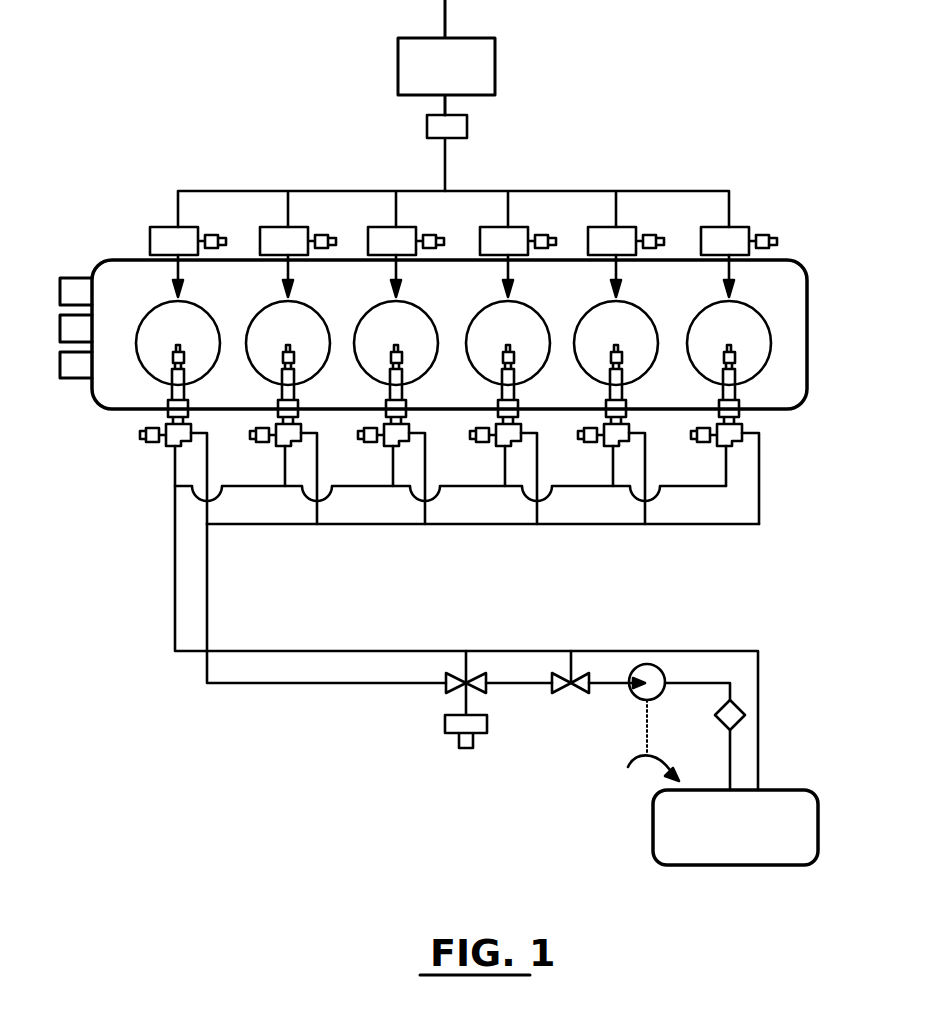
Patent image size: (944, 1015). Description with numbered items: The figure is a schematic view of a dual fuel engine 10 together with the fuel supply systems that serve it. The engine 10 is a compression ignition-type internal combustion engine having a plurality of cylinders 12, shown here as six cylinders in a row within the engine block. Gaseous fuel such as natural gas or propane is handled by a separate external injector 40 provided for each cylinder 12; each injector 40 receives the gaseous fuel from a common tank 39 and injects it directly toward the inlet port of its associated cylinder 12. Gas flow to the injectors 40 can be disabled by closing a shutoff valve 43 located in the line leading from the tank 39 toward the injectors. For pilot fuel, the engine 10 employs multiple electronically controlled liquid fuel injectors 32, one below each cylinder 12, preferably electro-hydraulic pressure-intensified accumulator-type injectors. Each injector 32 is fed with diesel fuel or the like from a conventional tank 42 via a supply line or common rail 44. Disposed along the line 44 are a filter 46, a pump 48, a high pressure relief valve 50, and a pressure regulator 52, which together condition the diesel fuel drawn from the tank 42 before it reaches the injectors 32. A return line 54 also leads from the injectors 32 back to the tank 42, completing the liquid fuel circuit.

The engine 10 is at (808, 320).
The cylinder 12 is at (263, 322).
The liquid fuel injector 32 is at (285, 447).
The tank 39 is at (473, 65).
The external injector 40 is at (162, 234).
The shutoff valve 43 is at (467, 127).
The tank 42 is at (793, 790).
The supply line 44 is at (267, 683).
The filter 46 is at (741, 706).
The pump 48 is at (642, 702).
The high pressure relief valve 50 is at (566, 695).
The pressure regulator 52 is at (447, 688).
The return line 54 is at (172, 563).